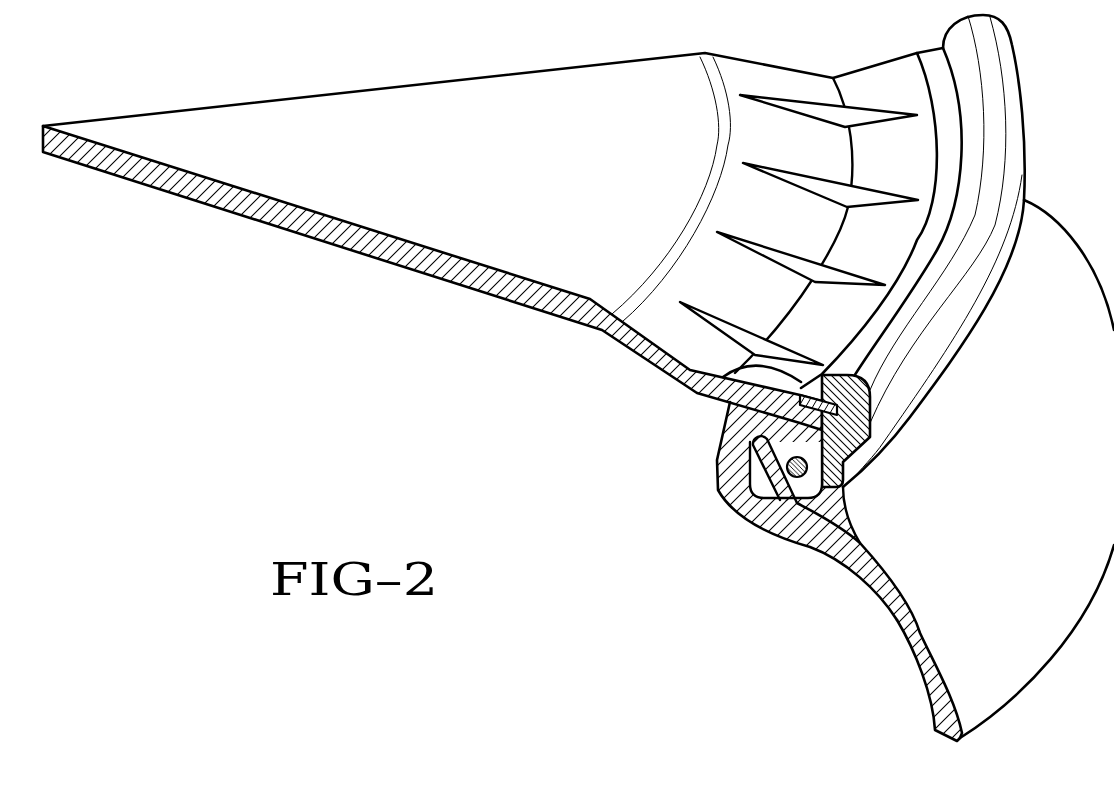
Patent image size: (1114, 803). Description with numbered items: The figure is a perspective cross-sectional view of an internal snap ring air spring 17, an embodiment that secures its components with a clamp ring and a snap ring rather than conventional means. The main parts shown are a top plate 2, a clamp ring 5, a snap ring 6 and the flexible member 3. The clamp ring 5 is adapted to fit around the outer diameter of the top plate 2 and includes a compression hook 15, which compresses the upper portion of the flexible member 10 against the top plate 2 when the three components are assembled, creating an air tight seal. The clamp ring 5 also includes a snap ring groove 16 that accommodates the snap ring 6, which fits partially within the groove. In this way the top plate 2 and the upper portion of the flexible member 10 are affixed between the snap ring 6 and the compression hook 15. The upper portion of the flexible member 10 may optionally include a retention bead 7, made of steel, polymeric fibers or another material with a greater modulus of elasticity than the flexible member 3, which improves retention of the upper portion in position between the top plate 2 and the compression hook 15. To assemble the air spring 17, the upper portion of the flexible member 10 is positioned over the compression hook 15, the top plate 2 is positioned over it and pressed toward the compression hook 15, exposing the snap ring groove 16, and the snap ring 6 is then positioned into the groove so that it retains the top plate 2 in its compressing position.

The top plate 2 is at (578, 312).
The flexible member 3 is at (897, 613).
The clamp ring 5 is at (798, 505).
The snap ring 6 is at (703, 386).
The retention bead 7 is at (788, 474).
The upper portion of the flexible member 10 is at (726, 420).
The compression hook 15 is at (746, 468).
The snap ring groove 16 is at (855, 397).
The internal snap ring air spring 17 is at (510, 418).